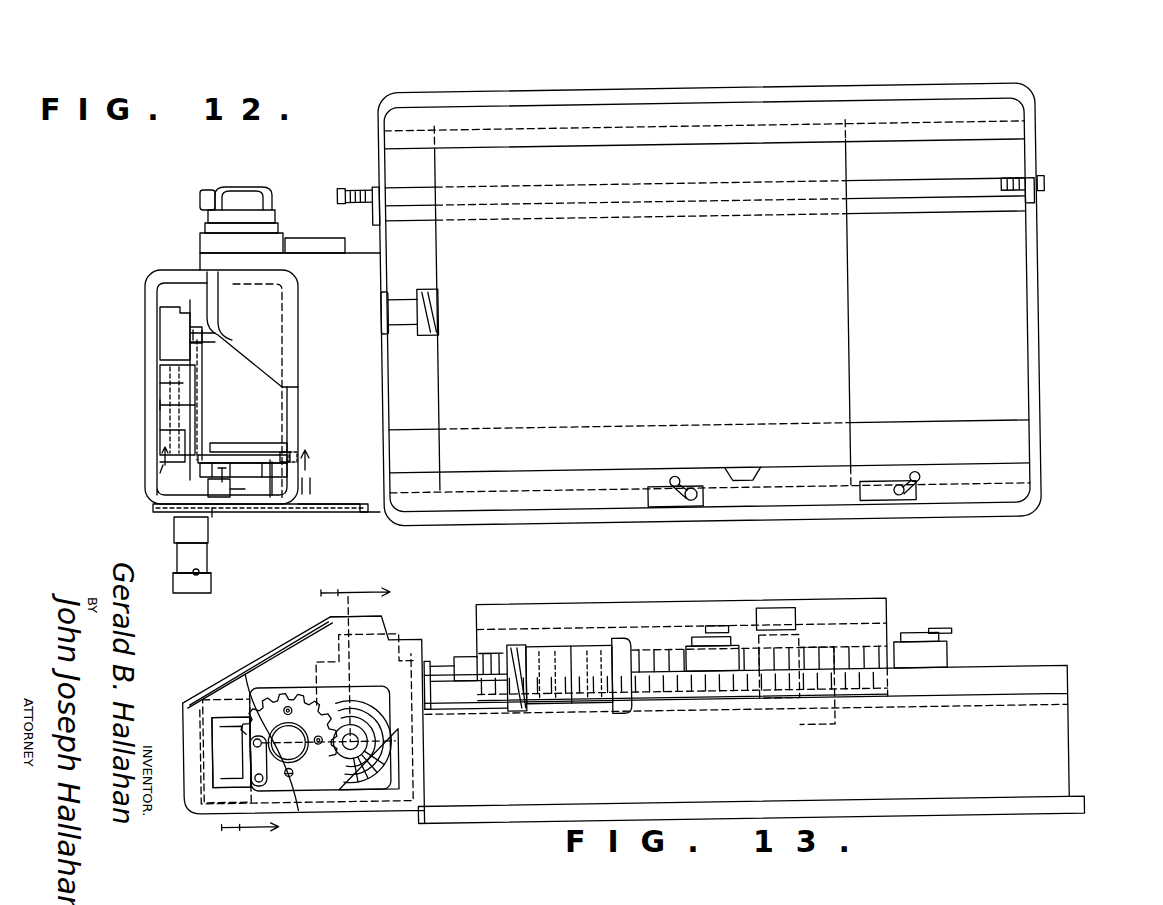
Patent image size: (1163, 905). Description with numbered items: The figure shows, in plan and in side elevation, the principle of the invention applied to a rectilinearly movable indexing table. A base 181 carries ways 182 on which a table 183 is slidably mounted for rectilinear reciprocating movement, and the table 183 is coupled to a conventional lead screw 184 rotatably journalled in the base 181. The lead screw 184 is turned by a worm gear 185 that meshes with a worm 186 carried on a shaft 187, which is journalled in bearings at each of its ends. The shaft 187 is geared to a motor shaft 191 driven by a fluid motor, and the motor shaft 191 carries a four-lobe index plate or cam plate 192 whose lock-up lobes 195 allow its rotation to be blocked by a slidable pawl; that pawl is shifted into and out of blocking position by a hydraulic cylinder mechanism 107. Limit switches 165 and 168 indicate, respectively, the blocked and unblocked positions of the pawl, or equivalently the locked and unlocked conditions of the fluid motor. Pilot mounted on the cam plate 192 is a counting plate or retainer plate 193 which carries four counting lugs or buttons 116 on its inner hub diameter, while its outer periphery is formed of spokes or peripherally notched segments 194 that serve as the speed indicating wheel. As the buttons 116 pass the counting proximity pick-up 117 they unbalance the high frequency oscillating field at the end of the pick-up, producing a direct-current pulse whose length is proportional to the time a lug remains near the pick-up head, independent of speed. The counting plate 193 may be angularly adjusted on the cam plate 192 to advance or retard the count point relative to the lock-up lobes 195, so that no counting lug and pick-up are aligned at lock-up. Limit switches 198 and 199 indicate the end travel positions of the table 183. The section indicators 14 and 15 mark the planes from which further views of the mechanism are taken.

In FIG. 12, the hydraulic cylinder mechanism 107 is at (197, 578).
In FIG. 12, the counting lugs or buttons 116 is at (277, 465).
In FIG. 13, the counting lugs or buttons 116 is at (288, 769).
In FIG. 12, the counting proximity pick-up 117 is at (214, 517).
In FIG. 12, the limit switch 165 is at (183, 415).
In FIG. 12, the limit switch 168 is at (197, 337).
In FIG. 13, the limit switch 168 is at (212, 675).
In FIG. 12, the base 181 is at (1038, 282).
In FIG. 13, the base 181 is at (1030, 739).
In FIG. 12, the ways 182 is at (1010, 163).
In FIG. 12, the table 183 is at (702, 296).
In FIG. 13, the table 183 is at (628, 606).
In FIG. 12, the lead screw 184 is at (427, 328).
In FIG. 13, the lead screw 184 is at (622, 703).
In FIG. 13, the worm gear 185 is at (391, 614).
In FIG. 13, the worm 186 is at (382, 722).
In FIG. 13, the shaft 187 is at (363, 740).
In FIG. 13, the motor shaft 191 is at (246, 668).
In FIG. 12, the index plate or cam plate 192 is at (263, 455).
In FIG. 12, the counting plate or retainer plate 193 is at (280, 462).
In FIG. 13, the counting plate or retainer plate 193 is at (305, 765).
In FIG. 13, the spokes or peripherally notched segments 194 is at (310, 692).
In FIG. 13, the lock-up lobes 195 is at (287, 688).
In FIG. 12, the limit switch 198 is at (677, 487).
In FIG. 13, the limit switch 198 is at (712, 627).
In FIG. 12, the limit switch 199 is at (908, 497).
In FIG. 13, the limit switch 199 is at (950, 632).
In FIG. 13, the section line 14- 14 is at (305, 707).
In FIG. 12, the section line 15- 15 is at (85, 494).